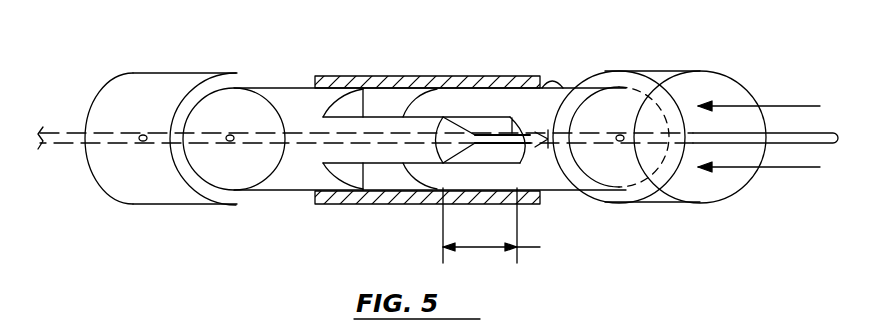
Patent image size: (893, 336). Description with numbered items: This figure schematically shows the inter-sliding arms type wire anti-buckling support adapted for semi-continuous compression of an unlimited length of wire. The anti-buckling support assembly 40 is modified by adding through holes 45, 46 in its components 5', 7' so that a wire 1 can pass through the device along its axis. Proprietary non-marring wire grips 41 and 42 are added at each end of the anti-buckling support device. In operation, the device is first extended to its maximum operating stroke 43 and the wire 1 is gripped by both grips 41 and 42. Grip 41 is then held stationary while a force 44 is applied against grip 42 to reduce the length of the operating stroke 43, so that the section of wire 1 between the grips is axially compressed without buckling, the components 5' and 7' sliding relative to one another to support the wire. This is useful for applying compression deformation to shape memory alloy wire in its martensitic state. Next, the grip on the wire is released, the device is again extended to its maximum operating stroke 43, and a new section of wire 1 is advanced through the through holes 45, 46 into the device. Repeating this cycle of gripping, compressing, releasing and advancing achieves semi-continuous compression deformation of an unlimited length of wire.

The wire 1 is at (71, 132).
The component 5' is at (430, 102).
The component 7' is at (446, 83).
The connector body 40 is at (605, 68).
The non-marring wire grip 41 is at (207, 73).
The non-marring wire grip 42 is at (635, 79).
The operating stroke 43 is at (512, 225).
The force 44 is at (820, 167).
The through hole 45 is at (309, 140).
The through hole 46 is at (560, 158).